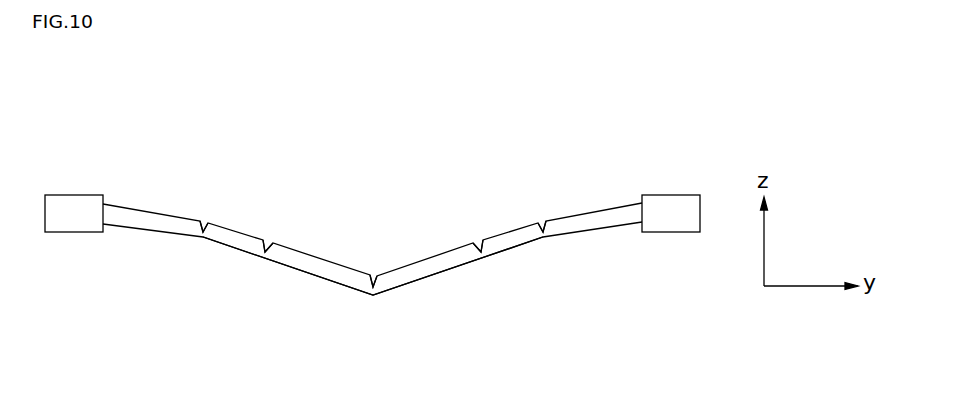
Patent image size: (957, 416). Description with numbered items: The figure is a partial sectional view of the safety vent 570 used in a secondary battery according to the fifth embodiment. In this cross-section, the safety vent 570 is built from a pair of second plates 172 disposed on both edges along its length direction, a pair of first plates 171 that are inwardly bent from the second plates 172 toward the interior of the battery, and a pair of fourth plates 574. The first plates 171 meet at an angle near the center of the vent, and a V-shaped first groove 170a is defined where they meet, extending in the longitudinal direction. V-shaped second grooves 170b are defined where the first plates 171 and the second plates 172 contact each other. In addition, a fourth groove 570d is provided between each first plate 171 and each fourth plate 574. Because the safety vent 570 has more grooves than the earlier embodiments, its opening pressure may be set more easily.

The safety vent 570 is at (386, 196).
The fourth groove 570d is at (270, 228).
The first groove 170a is at (375, 272).
The second groove 170b is at (208, 212).
The first plate 171 is at (292, 256).
The second plate 172 is at (143, 218).
The fourth plate 574 is at (232, 240).